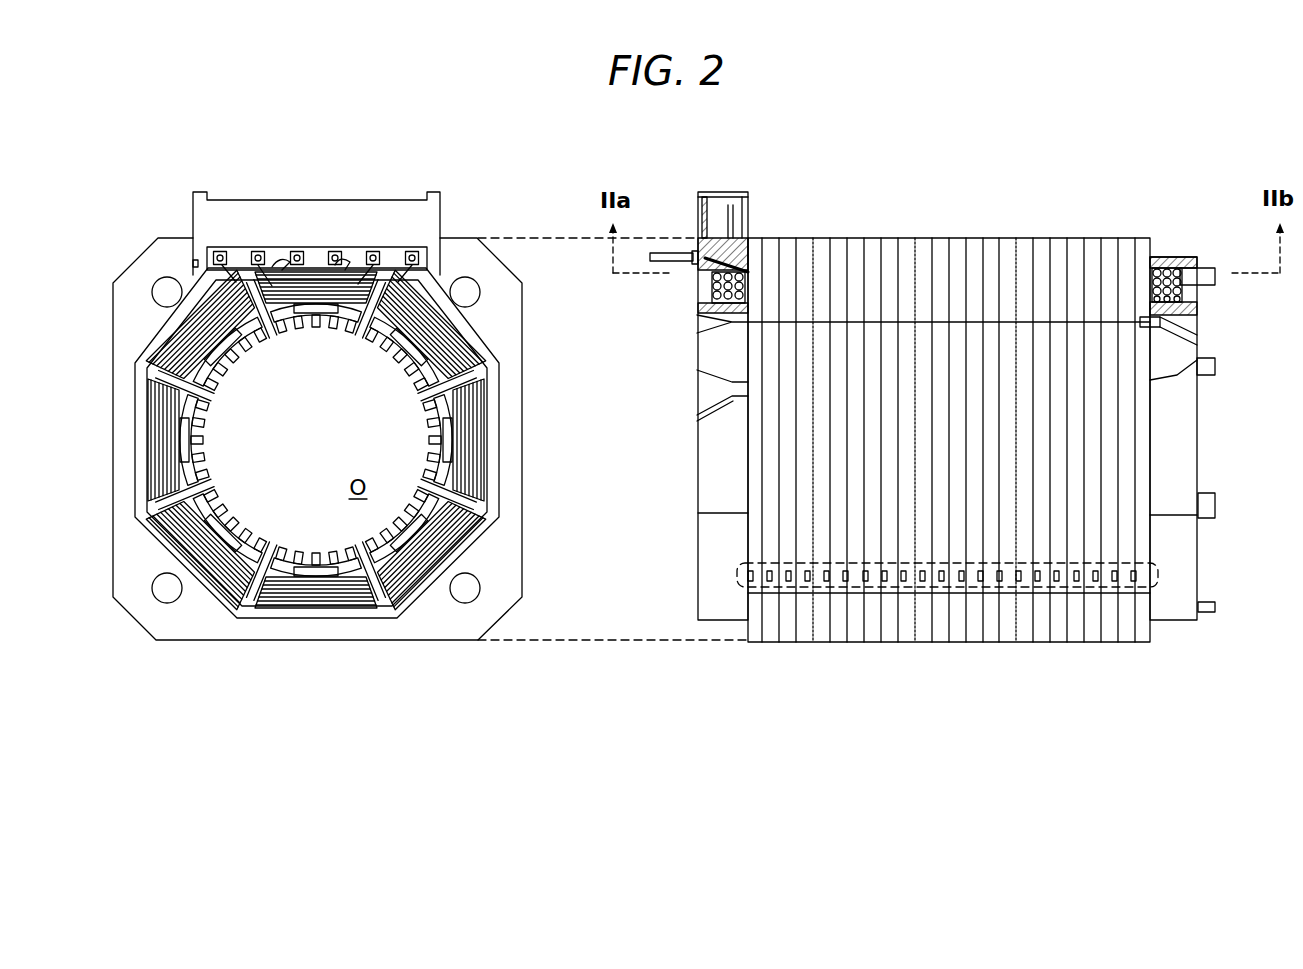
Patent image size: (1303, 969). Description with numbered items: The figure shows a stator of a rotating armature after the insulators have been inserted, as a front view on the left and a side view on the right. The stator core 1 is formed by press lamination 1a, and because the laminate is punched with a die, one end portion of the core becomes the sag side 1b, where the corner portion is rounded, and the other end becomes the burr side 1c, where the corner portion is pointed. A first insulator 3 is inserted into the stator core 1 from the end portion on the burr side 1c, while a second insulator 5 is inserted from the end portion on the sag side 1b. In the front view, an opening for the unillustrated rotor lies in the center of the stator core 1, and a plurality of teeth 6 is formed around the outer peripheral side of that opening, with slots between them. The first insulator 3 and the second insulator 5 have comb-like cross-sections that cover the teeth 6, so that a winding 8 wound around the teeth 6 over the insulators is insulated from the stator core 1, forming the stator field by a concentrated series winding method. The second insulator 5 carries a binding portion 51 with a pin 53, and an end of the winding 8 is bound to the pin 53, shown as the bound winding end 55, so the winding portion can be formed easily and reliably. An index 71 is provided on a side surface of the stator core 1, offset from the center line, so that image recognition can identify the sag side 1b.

The stator core 1 is at (146, 233).
The press lamination 1a is at (834, 233).
The sag side 1b is at (372, 641).
The burr side 1c is at (1152, 603).
The first insulator 3 is at (1179, 247).
The second insulator 5 is at (222, 187).
The teeth 6 is at (331, 330).
The winding 8 is at (312, 262).
The binding portion 51 is at (400, 246).
The pin 53 is at (334, 262).
The bound winding end 55 is at (352, 268).
The index 71 is at (737, 577).